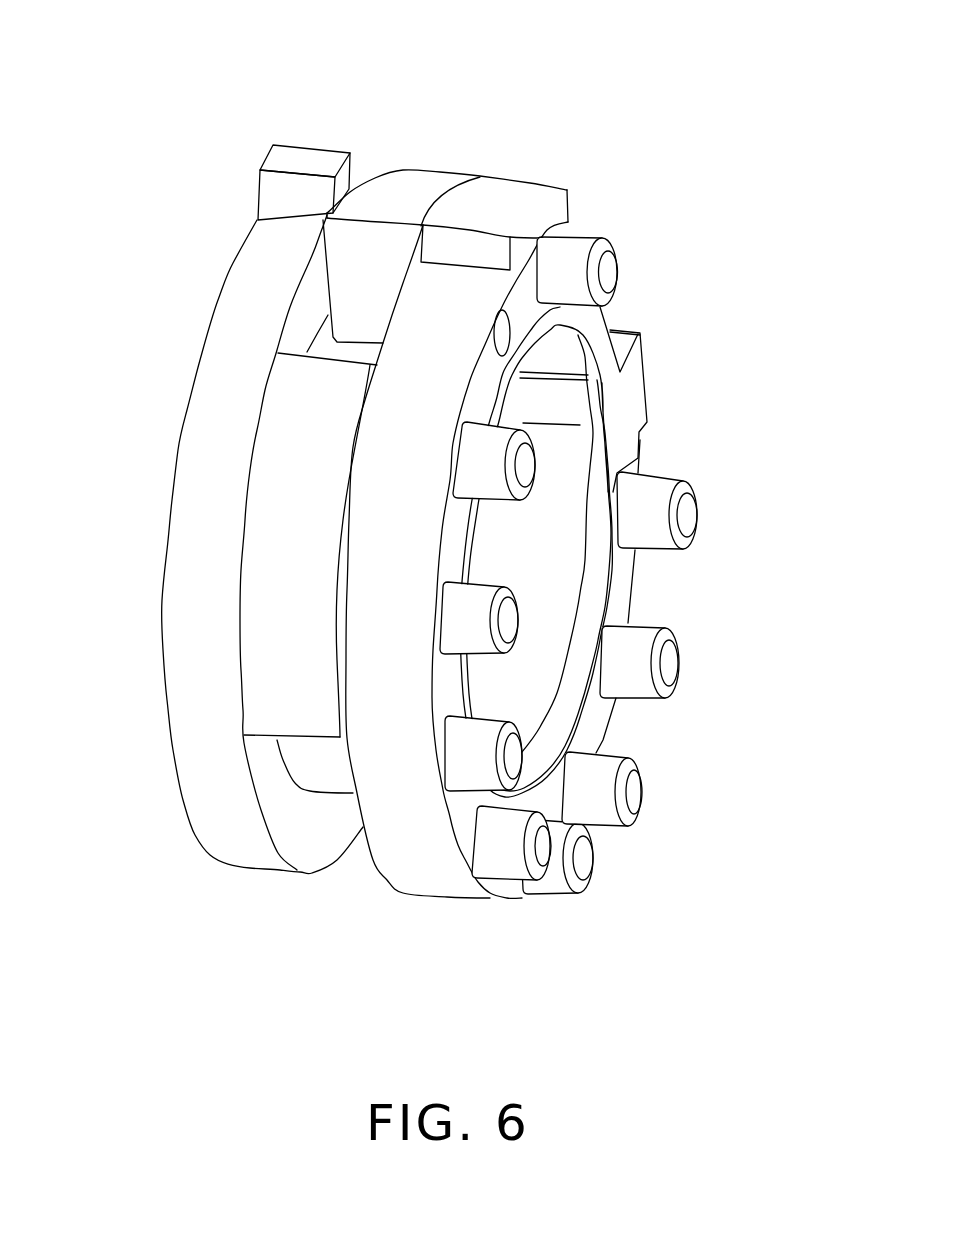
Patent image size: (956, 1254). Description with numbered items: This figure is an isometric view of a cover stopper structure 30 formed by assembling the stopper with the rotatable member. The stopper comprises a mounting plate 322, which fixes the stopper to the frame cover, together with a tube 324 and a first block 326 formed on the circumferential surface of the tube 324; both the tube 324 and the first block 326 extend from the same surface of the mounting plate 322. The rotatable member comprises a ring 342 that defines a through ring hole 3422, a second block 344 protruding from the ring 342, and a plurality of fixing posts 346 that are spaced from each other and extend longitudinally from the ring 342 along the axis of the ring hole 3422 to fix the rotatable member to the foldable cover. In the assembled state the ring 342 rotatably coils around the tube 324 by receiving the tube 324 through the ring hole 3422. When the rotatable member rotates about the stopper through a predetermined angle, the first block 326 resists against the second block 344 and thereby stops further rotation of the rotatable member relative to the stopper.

The rotor assembly 30 is at (516, 68).
The mounting plate 322 is at (268, 263).
The tube 324 is at (595, 445).
The first block 326 is at (280, 662).
The ring 342 is at (433, 867).
The second block 344 is at (416, 185).
The fixing posts 346 is at (597, 777).
The ring hole 3422 is at (566, 357).